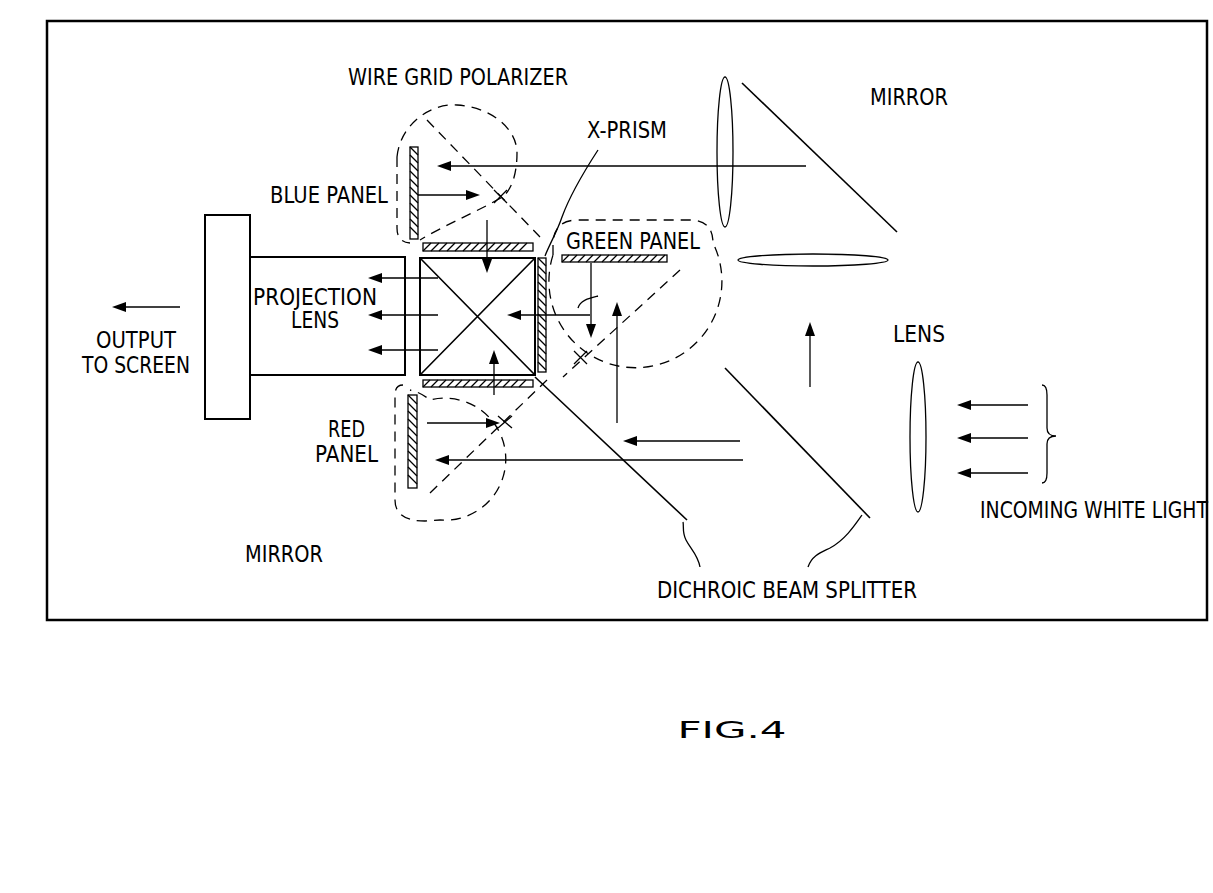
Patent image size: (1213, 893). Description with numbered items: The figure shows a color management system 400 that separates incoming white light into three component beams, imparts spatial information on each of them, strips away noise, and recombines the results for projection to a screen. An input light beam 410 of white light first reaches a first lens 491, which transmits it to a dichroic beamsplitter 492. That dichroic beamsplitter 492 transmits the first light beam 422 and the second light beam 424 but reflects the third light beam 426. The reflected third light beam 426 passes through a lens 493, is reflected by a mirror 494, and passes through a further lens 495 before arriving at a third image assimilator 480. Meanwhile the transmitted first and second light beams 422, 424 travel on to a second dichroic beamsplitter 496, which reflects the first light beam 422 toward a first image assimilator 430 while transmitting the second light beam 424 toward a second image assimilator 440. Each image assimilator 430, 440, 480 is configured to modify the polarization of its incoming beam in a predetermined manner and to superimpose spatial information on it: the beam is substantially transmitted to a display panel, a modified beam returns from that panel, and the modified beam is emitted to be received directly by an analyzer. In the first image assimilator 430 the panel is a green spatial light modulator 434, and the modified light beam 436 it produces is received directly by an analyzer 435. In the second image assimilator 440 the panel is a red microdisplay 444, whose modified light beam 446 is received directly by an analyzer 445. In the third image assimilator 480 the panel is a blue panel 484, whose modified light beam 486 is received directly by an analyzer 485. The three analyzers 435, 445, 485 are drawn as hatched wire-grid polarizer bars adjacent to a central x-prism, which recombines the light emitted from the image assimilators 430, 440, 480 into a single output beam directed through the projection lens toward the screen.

The color management system 400 is at (1110, 79).
The input light beam 410 is at (1022, 434).
The first light beam 422 is at (619, 402).
The second light beam 424 is at (568, 462).
The third light beam 426 is at (640, 168).
The first image assimilator 430 is at (690, 318).
The green spatial light modulator 434 is at (667, 258).
The analyzer 435 is at (549, 364).
The modified light beam 436 is at (578, 308).
The second image assimilator 440 is at (483, 497).
The red microdisplay 444 is at (413, 490).
The analyzer 445 is at (422, 383).
The modified light beam 446 is at (507, 392).
The third image assimilator 480 is at (505, 135).
The blue panel 484 is at (409, 151).
The analyzer 485 is at (537, 250).
The modified light beam 486 is at (494, 236).
The first lens 491 is at (921, 365).
The dichroic beamsplitter 492 is at (826, 470).
The lens 493 is at (890, 258).
The mirror 494 is at (850, 185).
The lens 495 is at (728, 80).
The dichroic beamsplitter 496 is at (680, 508).